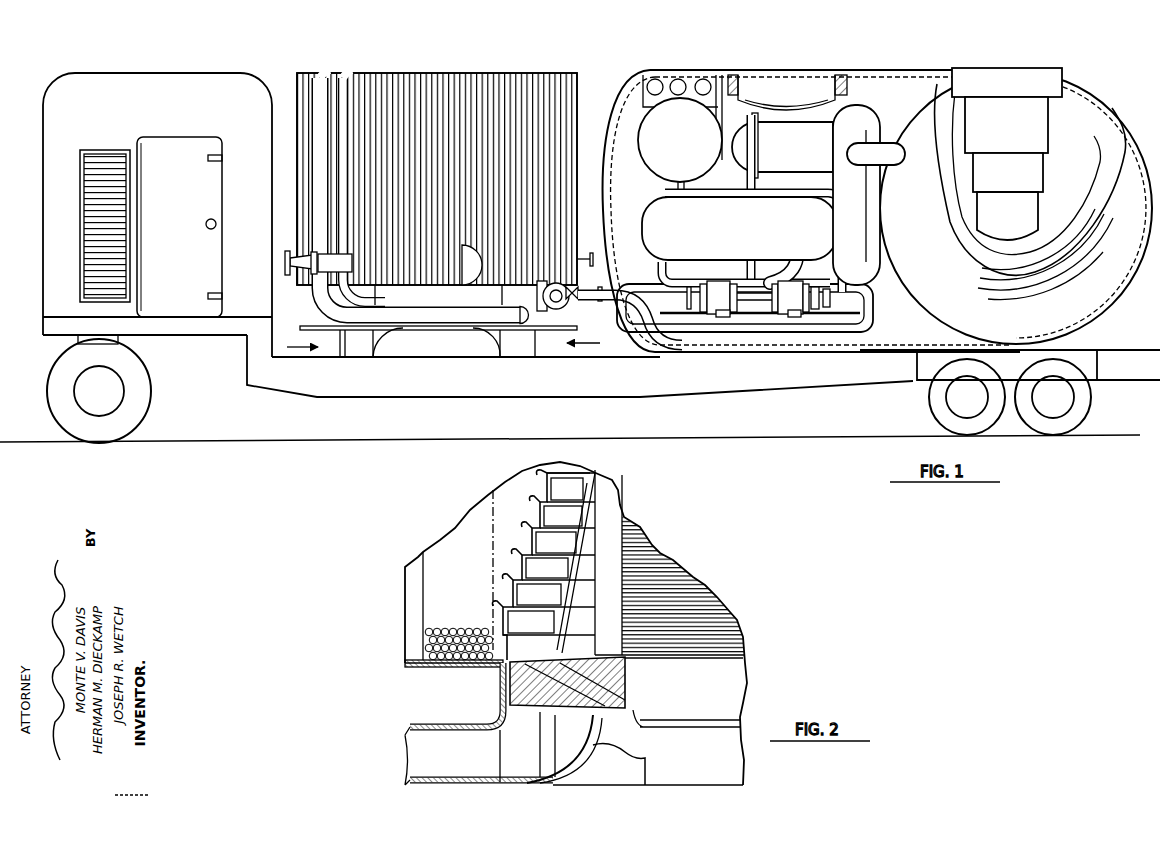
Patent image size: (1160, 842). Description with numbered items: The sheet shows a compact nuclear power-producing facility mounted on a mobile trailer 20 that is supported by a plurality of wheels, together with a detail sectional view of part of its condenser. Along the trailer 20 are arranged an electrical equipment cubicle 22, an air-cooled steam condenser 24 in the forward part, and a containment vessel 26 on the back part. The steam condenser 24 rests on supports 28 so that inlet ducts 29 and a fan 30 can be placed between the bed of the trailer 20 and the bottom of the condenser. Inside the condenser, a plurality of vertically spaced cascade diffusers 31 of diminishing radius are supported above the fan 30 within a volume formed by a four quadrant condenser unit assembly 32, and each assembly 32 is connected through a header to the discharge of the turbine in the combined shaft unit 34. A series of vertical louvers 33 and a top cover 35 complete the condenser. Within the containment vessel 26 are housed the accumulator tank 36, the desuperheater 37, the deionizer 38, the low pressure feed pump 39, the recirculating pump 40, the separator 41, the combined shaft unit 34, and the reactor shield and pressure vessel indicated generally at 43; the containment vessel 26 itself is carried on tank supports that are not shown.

In FIG. 1, the trailer 20 is at (297, 388).
In FIG. 1, the electrical equipment cubicle 22 is at (173, 90).
In FIG. 1, the air-cooled steam condenser 24 is at (420, 64).
In FIG. 2, the air-cooled steam condenser 24 is at (680, 556).
In FIG. 1, the containment vessel 26 is at (896, 66).
In FIG. 1, the supports 28 is at (345, 342).
In FIG. 2, the supports 28 is at (503, 686).
In FIG. 2, the inlet ducts 29 is at (478, 762).
In FIG. 2, the fan 30 is at (625, 690).
In FIG. 2, the cascade diffusers 31 is at (530, 575).
In FIG. 2, the four quadrant condenser unit assembly 32 is at (433, 587).
In FIG. 1, the vertical louvers 33 is at (478, 280).
In FIG. 2, the vertical louvers 33 is at (418, 645).
In FIG. 1, the combined shaft unit 34 is at (739, 228).
In FIG. 1, the top cover 35 is at (470, 73).
In FIG. 1, the accumulator tank 36 is at (742, 136).
In FIG. 1, the desuperheater 37 is at (782, 145).
In FIG. 1, the deionizer 38 is at (691, 338).
In FIG. 1, the low pressure feed pump 39 is at (723, 312).
In FIG. 1, the recirculating pump 40 is at (813, 304).
In FIG. 1, the separator 41 is at (866, 113).
In FIG. 1, the reactor shield and pressure vessel 43 is at (1098, 95).